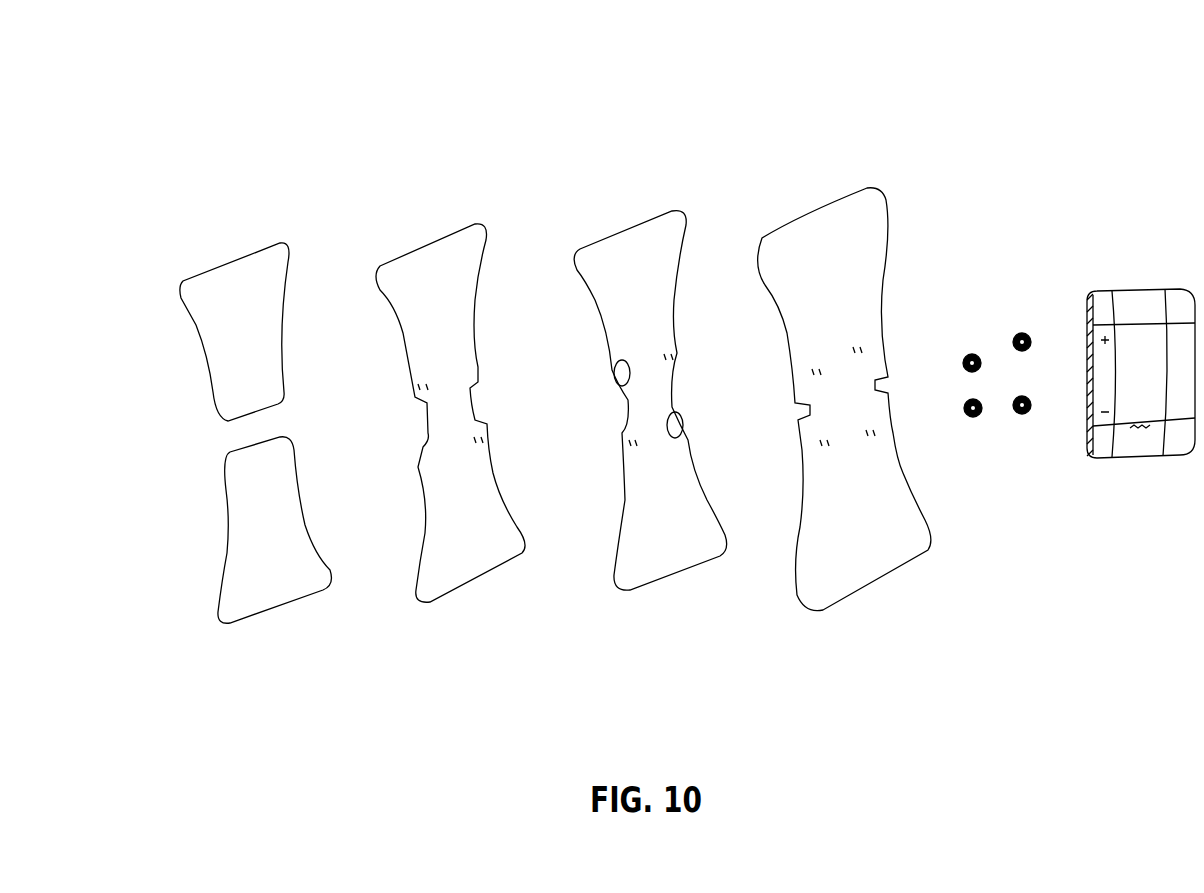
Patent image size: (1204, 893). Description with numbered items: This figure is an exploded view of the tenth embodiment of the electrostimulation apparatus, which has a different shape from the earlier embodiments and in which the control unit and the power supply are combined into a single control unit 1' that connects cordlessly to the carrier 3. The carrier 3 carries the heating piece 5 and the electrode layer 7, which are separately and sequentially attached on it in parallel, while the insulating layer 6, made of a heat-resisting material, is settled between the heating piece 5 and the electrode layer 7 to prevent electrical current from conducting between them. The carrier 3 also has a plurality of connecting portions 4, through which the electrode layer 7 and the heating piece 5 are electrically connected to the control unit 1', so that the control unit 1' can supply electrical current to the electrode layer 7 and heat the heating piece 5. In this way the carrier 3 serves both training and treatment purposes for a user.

The electrode layer 7 is at (230, 248).
The insulating layer 6 is at (427, 232).
The heating piece 5 is at (617, 219).
The carrier 3 is at (815, 200).
The connecting portions 4 is at (1015, 328).
The control unit 1' is at (1141, 335).